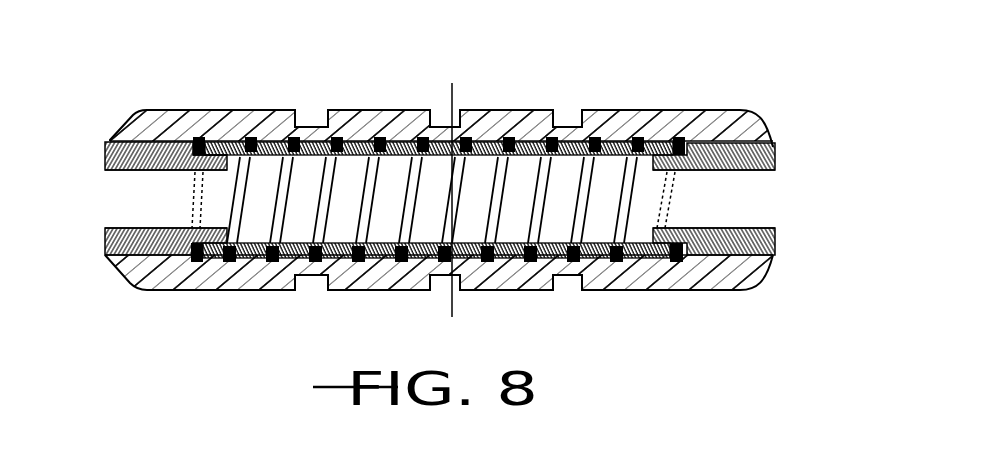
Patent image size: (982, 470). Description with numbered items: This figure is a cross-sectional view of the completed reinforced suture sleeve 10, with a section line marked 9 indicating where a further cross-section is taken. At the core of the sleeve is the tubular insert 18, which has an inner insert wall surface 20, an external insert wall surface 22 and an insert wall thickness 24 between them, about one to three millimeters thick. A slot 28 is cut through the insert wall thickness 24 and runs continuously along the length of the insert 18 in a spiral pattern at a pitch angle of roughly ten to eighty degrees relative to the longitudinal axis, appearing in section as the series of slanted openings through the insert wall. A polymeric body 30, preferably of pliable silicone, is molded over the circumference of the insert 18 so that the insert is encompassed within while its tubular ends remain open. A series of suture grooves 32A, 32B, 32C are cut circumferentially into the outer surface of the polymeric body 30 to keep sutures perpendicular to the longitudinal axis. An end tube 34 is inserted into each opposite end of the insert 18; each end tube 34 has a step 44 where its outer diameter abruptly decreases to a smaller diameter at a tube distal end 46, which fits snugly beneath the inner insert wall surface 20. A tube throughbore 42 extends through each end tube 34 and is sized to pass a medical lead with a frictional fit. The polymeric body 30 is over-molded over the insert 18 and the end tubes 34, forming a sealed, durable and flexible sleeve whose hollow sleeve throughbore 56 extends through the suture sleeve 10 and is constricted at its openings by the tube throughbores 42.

The reinforced suture sleeve 10 is at (724, 90).
The insert 18 is at (267, 137).
The inner insert wall surface 20 is at (322, 249).
The external insert wall surface 22 is at (233, 253).
The insert wall thickness 24 is at (60, 197).
The slot 28 is at (538, 207).
The polymeric body 30 is at (713, 267).
The suture groove 32A is at (310, 117).
The suture groove 32B is at (443, 120).
The suture groove 32C is at (565, 115).
The end tube 34 is at (773, 158).
The tube throughbore 42 is at (163, 227).
The step 44 is at (203, 140).
The tube distal end 46 is at (193, 153).
The sleeve throughbore 56 is at (783, 147).
The section line 9- 9 is at (446, 95).